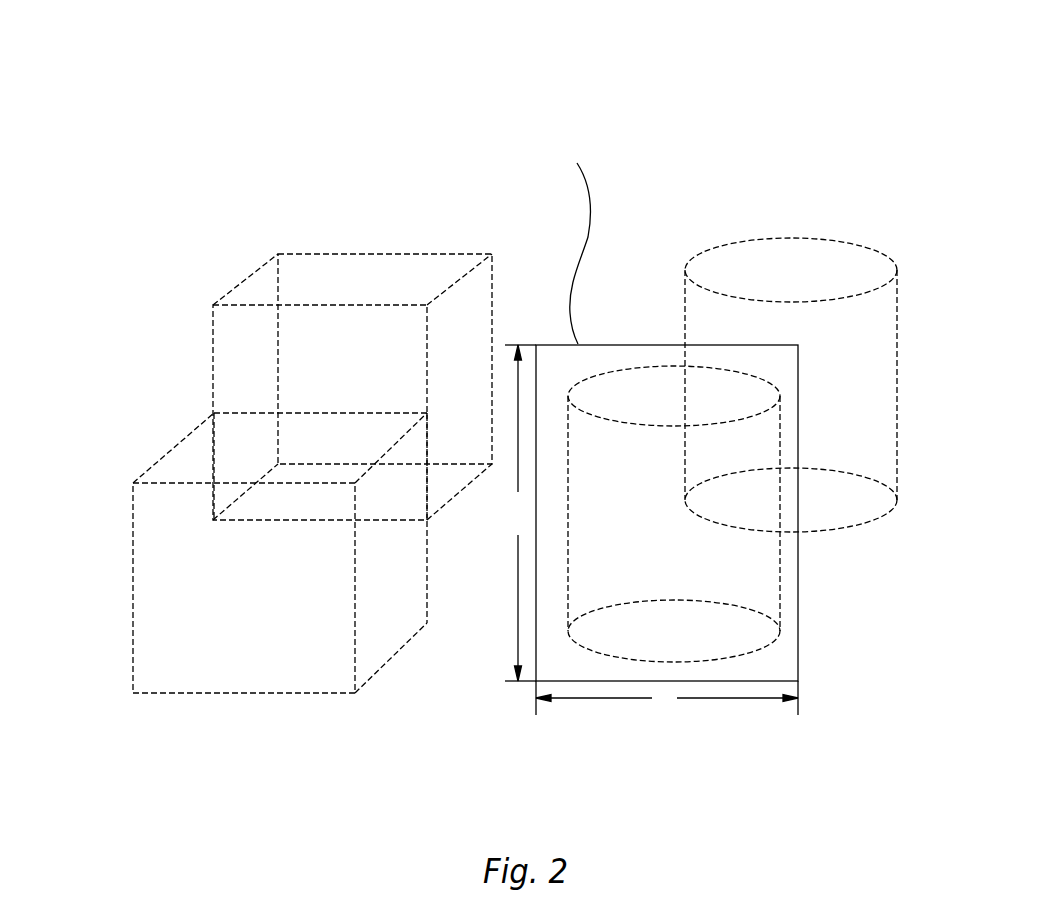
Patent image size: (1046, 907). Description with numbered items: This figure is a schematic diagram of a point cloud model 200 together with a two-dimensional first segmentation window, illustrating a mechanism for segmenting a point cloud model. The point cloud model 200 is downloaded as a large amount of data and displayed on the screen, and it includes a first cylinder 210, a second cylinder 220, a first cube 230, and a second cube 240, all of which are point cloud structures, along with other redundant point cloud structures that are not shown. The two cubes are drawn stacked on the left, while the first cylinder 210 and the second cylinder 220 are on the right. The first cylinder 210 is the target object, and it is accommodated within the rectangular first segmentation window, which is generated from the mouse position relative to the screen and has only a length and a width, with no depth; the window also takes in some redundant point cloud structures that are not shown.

The point cloud model 200 is at (129, 199).
The first cylinder 210 is at (733, 555).
The second cylinder 220 is at (838, 331).
The first cube 230 is at (365, 280).
The second cube 240 is at (238, 643).